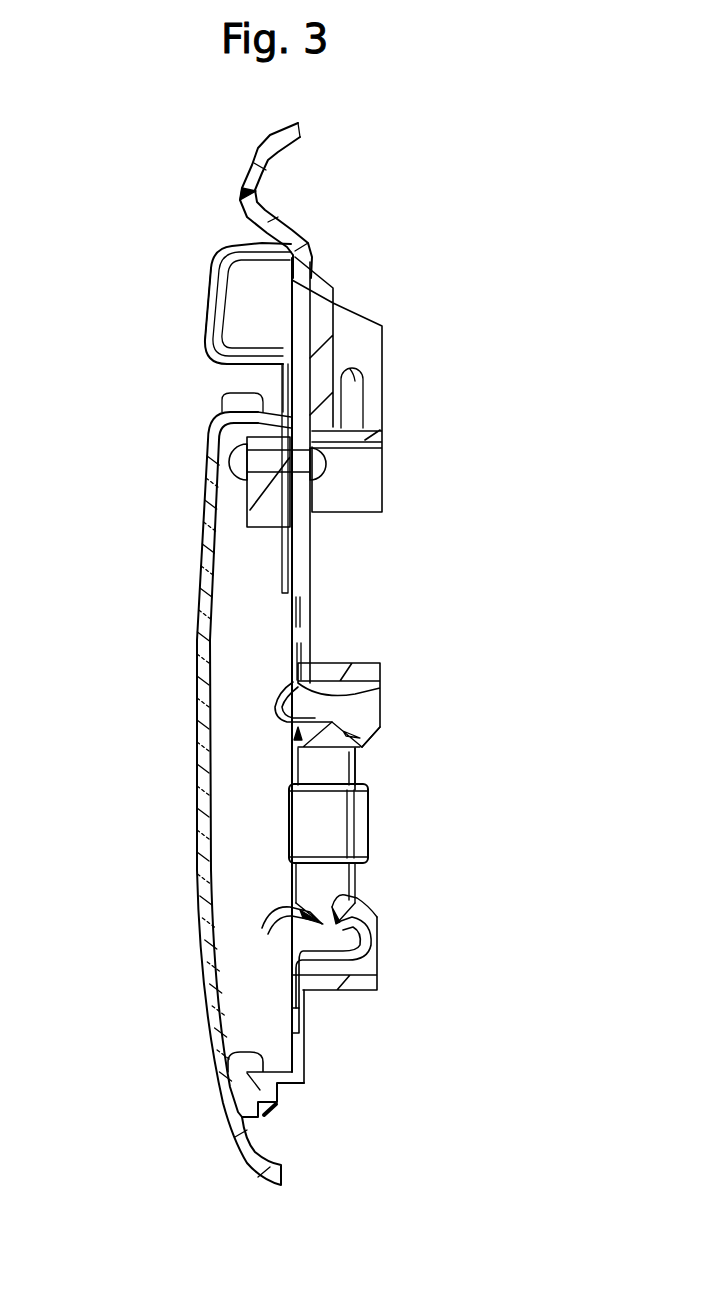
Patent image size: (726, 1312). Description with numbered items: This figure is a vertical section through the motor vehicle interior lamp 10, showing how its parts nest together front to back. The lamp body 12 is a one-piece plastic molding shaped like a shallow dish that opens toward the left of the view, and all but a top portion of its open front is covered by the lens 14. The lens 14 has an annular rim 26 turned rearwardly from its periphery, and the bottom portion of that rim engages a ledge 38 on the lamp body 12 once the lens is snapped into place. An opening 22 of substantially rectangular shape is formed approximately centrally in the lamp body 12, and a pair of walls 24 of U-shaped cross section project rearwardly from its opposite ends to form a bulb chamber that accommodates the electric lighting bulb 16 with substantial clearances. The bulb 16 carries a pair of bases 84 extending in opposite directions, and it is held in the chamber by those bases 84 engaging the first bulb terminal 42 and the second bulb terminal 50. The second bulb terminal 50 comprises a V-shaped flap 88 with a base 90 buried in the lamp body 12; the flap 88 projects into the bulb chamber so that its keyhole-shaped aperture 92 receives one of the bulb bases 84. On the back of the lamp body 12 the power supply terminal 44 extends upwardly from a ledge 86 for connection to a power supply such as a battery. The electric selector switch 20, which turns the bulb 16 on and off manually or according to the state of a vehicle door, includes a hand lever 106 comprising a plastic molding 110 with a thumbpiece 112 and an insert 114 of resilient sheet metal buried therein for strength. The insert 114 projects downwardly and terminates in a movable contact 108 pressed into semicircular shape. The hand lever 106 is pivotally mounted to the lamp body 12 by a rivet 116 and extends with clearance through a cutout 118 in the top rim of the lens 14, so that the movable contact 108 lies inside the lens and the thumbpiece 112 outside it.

The motor vehicle interior lamp 10 is at (172, 310).
The lamp body 12 is at (270, 218).
The lens 14 is at (208, 673).
The electric lighting bulb 16 is at (312, 823).
The electric selector switch 20 is at (195, 280).
The opening 22 is at (380, 698).
The walls 24 is at (370, 718).
The annular rim 26 is at (285, 1098).
The ledge 38 is at (232, 1060).
The first bulb terminal 42 is at (290, 736).
The power supply terminal 44 is at (357, 372).
The second bulb terminal 50 is at (250, 919).
The bulb bases 84 is at (343, 771).
The ledge 86 is at (368, 428).
The V shaped flap 88 is at (377, 931).
The base 90 is at (302, 1015).
The keyhole shaped aperture 92 is at (360, 903).
The hand lever 106 is at (233, 245).
The movable contact 108 is at (283, 558).
The molding 110 is at (200, 348).
The thumbpiece 112 is at (220, 250).
The insert 114 is at (283, 553).
The rivet 116 is at (240, 470).
The cutout 118 is at (257, 401).